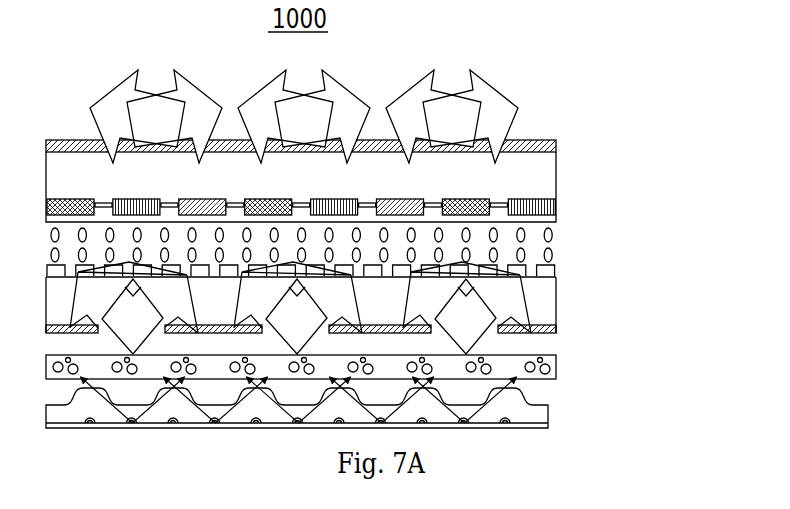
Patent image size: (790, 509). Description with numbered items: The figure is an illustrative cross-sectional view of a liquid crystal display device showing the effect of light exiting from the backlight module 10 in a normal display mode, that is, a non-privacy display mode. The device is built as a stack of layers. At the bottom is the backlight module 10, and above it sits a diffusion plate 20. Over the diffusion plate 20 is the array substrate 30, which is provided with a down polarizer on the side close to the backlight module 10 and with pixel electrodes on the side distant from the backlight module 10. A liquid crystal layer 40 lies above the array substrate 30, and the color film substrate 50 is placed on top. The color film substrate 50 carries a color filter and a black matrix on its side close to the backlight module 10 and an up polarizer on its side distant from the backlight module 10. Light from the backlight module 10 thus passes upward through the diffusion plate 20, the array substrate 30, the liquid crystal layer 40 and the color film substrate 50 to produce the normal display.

The backlight module 10 is at (530, 405).
The diffusion plate 20 is at (555, 362).
The array substrate 30 is at (547, 303).
The liquid crystal layer 40 is at (535, 255).
The color film substrate 50 is at (538, 182).